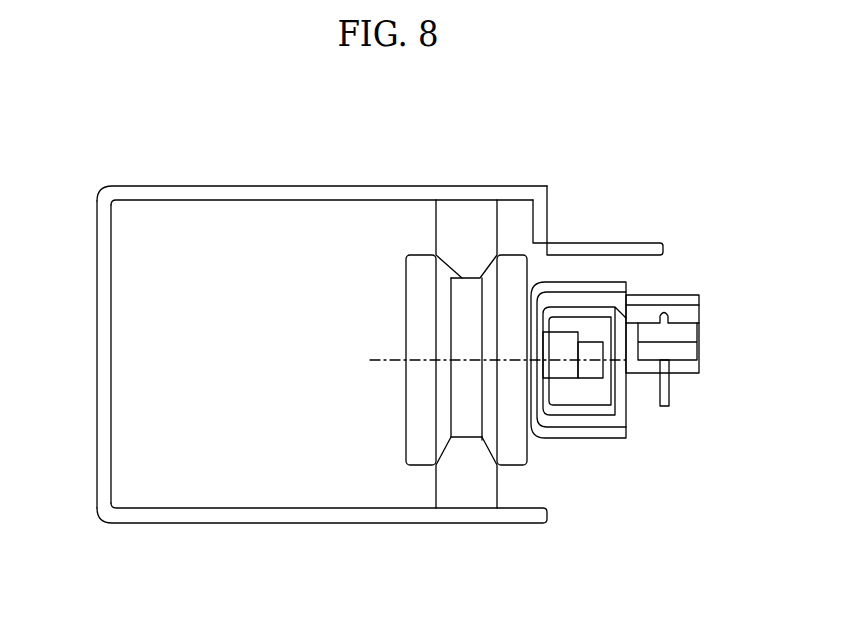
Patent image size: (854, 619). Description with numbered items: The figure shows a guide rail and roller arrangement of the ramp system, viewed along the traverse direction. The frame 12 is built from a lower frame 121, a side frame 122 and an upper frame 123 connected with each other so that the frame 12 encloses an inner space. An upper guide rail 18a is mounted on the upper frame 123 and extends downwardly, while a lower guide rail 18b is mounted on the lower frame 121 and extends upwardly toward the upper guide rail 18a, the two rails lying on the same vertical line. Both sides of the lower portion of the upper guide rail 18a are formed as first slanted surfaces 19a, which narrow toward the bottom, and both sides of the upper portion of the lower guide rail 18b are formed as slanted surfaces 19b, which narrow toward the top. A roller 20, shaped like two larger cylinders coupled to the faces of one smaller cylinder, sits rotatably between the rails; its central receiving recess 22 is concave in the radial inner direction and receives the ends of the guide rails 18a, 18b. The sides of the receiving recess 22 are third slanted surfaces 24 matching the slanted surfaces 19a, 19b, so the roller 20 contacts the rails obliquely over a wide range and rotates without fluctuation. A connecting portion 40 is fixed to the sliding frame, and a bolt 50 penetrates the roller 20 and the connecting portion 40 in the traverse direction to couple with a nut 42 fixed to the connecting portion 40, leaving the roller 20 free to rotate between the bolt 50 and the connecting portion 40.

The frame 12 is at (351, 347).
The lower frame 121 is at (270, 525).
The side frame 122 is at (97, 356).
The upper frame 123 is at (268, 190).
The upper guide rail 18a is at (462, 218).
The lower guide rail 18b is at (465, 490).
The first slanted surface 19a is at (521, 236).
The first slanted surface 19b is at (500, 470).
The roller 20 is at (468, 358).
The receiving recess 22 is at (479, 262).
The third slanted surface 24 is at (449, 258).
The connecting portion 40 is at (629, 346).
The nut 42 is at (582, 388).
The bolt 50 is at (594, 368).